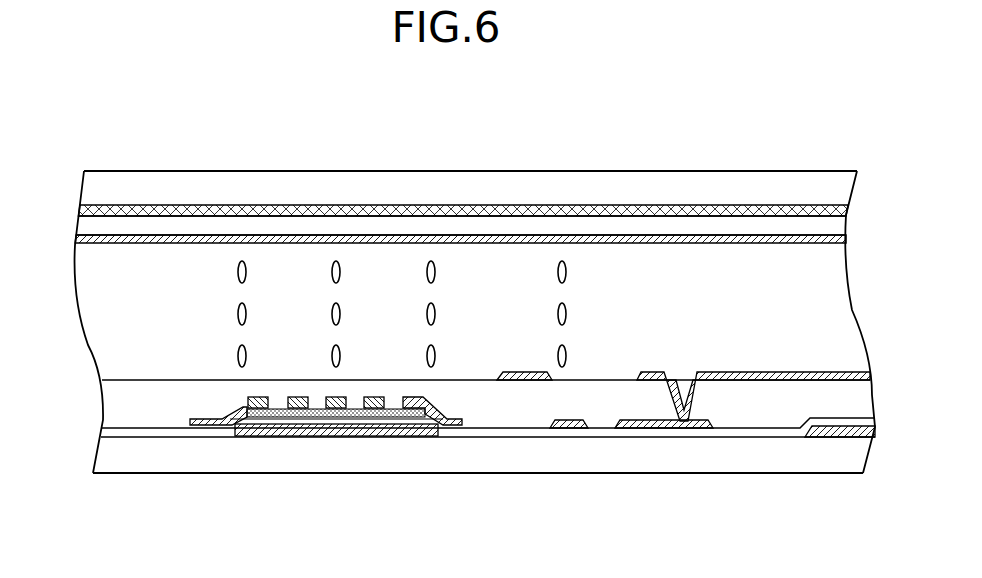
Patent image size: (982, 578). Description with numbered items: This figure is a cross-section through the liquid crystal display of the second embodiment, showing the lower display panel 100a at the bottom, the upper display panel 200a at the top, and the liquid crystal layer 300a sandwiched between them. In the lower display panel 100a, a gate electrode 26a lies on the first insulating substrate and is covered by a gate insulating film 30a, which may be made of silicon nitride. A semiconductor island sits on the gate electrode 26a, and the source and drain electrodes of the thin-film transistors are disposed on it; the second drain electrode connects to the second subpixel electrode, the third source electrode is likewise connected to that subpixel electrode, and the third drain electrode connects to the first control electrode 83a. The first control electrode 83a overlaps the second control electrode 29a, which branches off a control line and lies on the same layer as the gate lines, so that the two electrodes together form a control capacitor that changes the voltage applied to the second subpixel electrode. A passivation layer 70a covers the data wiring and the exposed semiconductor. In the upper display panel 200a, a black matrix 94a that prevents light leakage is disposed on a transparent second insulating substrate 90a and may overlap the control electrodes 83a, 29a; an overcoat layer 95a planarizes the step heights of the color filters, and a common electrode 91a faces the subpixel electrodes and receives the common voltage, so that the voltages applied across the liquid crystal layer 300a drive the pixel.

The upper display panel 200a is at (68, 172).
The liquid crystal layer 300a is at (68, 248).
The lower display panel 100a is at (68, 374).
The second insulating substrate 90a is at (275, 193).
The black matrix 94a is at (556, 203).
The overcoat layer 95a is at (418, 223).
The common electrode 91a is at (175, 232).
The passivation layer 70a is at (117, 415).
The gate insulating film 30a is at (165, 432).
The gate electrode 26a is at (324, 436).
The first control electrode 83a is at (747, 381).
The second control electrode 29a is at (838, 437).